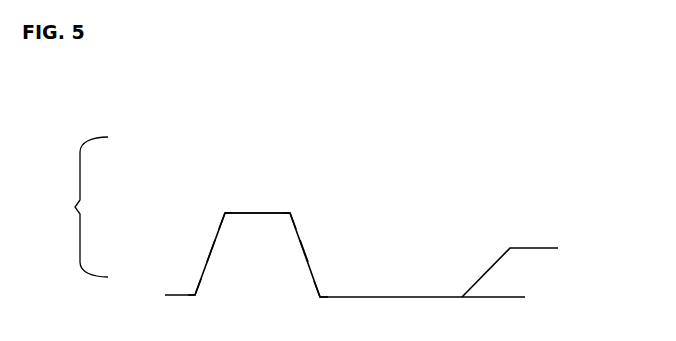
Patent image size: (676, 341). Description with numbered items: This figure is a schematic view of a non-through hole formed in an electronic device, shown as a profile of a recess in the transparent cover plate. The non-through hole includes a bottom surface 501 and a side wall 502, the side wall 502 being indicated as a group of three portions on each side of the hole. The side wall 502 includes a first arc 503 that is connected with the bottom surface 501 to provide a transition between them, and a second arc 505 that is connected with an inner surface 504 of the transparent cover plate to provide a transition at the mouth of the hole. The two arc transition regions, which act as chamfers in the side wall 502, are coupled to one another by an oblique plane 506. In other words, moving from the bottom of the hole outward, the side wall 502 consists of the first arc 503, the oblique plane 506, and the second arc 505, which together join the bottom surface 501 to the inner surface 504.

The bottom surface 501 is at (250, 212).
The side wall 502 is at (68, 207).
The first arc 503 is at (224, 210).
The inner surface 504 is at (510, 259).
The second arc 505 is at (195, 291).
The oblique plane 506 is at (212, 250).